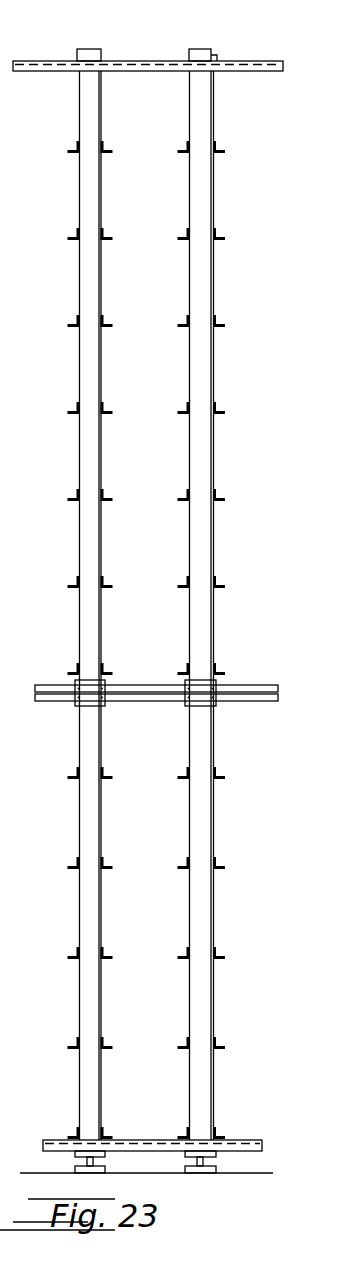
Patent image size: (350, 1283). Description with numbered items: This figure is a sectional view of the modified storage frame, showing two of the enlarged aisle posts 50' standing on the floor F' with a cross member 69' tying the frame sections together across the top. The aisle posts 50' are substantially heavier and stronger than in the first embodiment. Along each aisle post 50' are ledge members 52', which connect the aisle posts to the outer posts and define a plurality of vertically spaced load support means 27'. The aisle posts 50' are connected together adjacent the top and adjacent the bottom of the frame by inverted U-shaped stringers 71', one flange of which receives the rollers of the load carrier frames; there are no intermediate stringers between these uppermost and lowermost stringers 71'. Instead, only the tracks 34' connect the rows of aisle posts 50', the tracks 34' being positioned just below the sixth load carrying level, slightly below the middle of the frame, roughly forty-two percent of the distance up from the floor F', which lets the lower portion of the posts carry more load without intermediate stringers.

The cross member 69' is at (240, 35).
The inverted U-shaped stringer 71' is at (165, 591).
The load support means 27' is at (147, 640).
The aisle post 50' is at (229, 594).
The ledge member 52' is at (238, 605).
The track 34' is at (161, 676).
The floor level F' is at (160, 1154).